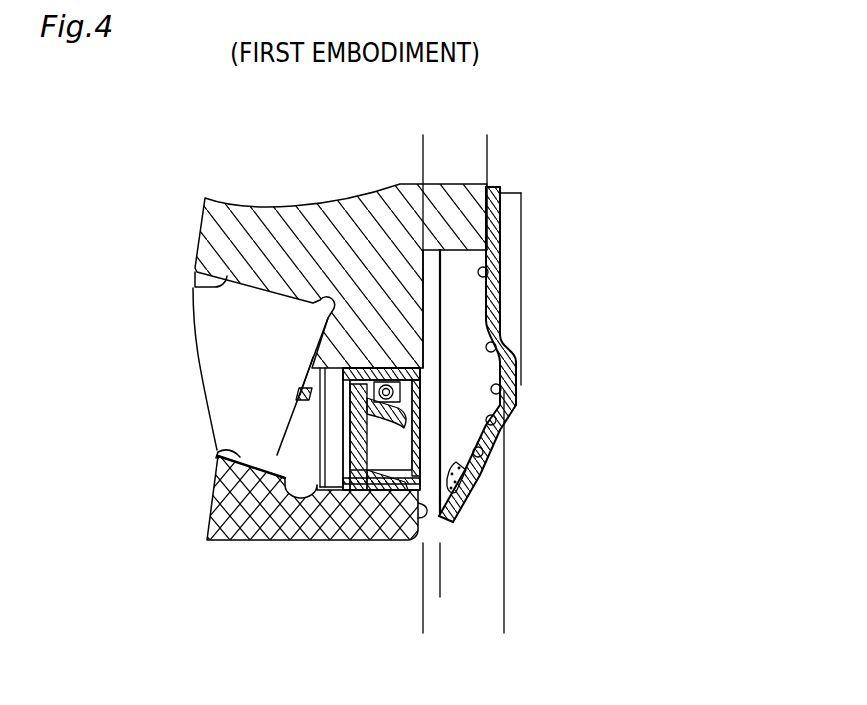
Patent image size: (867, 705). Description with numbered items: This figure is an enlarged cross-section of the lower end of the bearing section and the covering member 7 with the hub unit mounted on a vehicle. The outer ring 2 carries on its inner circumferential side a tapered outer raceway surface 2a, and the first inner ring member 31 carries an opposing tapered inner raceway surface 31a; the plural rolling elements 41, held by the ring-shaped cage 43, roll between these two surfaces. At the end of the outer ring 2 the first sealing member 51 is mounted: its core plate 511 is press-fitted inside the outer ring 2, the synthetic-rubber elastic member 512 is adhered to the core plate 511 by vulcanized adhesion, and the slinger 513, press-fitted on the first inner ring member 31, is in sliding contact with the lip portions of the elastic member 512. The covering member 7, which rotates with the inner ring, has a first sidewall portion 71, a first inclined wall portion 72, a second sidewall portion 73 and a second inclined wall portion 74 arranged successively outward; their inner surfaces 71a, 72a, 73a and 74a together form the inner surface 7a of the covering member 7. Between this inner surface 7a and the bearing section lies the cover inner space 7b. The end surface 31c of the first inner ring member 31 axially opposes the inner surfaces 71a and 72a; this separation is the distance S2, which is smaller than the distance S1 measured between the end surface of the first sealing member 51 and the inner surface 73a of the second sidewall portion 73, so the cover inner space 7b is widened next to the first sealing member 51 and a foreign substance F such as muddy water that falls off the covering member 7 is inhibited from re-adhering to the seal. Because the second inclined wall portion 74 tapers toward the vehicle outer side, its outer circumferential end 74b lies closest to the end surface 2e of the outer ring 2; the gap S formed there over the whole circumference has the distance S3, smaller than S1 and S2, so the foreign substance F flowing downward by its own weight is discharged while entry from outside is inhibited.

The first inner ring member 31 is at (258, 215).
The inner raceway surface 31a is at (196, 286).
The end surface 31c is at (423, 283).
The rolling elements 41 is at (218, 333).
The cage 43 is at (293, 418).
The outer ring 2 is at (227, 527).
The outer raceway surface 2a is at (220, 455).
The end surface 2e is at (397, 540).
The first sealing member 51 is at (333, 468).
The core plate 511 is at (300, 487).
The elastic member 512 is at (345, 500).
The slinger 513 is at (390, 490).
The covering member 7 is at (507, 197).
The inner surface 7a is at (512, 417).
The cover inner space 7b is at (468, 400).
The first sidewall portion 71 is at (500, 210).
The inner surface 71a is at (487, 275).
The first inclined wall portion 72 is at (500, 333).
The inner surface 72a is at (512, 343).
The second sidewall portion 73 is at (517, 372).
The inner surface 73a is at (497, 388).
The second inclined wall portion 74 is at (507, 433).
The inner surface 74a is at (480, 457).
The end 74b is at (455, 517).
The foreign substance F is at (467, 477).
The gap S is at (430, 517).
The distance S1 is at (504, 615).
The distance S2 is at (487, 153).
The distance S3 is at (462, 582).